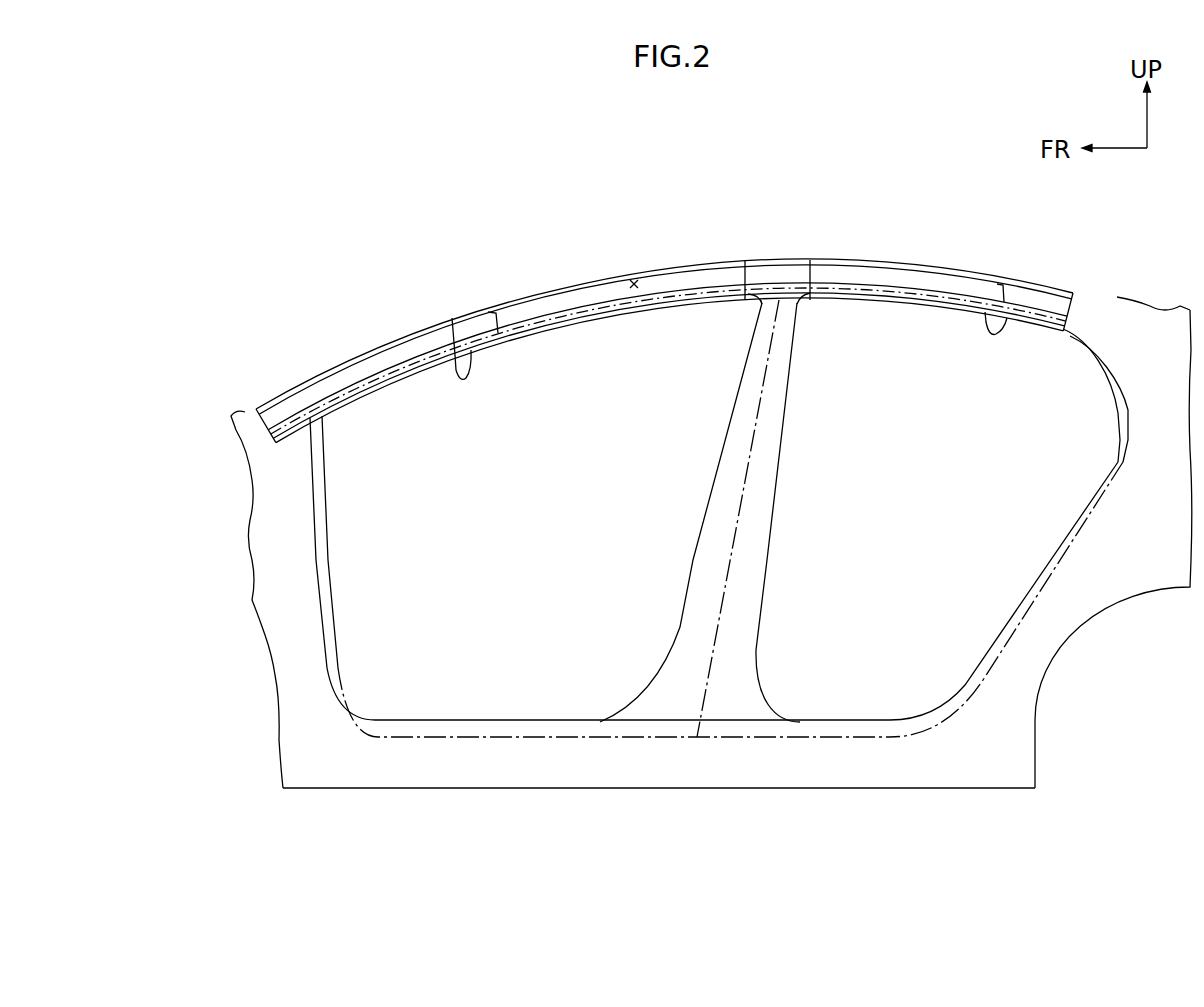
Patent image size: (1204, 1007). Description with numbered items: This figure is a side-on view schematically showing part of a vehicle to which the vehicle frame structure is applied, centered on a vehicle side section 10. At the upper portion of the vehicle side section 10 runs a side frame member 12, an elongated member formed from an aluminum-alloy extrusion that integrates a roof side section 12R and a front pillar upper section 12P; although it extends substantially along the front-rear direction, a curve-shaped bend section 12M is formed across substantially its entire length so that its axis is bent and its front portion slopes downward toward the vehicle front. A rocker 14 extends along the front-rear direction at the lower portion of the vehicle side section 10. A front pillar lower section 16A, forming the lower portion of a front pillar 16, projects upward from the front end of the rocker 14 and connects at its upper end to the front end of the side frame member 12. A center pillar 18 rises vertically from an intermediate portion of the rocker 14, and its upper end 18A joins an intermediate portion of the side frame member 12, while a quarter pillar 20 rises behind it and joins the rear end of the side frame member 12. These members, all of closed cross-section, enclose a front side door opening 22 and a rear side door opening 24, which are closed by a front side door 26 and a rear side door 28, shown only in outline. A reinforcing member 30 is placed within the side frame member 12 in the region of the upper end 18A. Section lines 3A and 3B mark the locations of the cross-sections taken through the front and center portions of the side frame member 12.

The vehicle side section 10 is at (462, 216).
The side frame member 12 is at (887, 256).
The front pillar upper section 12P is at (364, 348).
The roof side section 12R is at (678, 268).
The bend section 12M is at (750, 240).
The rocker 14 is at (688, 789).
The front pillar 16 is at (204, 430).
The front pillar lower section 16A is at (282, 545).
The center pillar 18 is at (749, 460).
The upper end of center pillar 18A is at (740, 306).
The quarter pillar 20 is at (1130, 405).
The front side door opening 22 is at (452, 318).
The rear side door opening 24 is at (1012, 318).
The front side door 26 is at (318, 620).
The rear side door 28 is at (1072, 538).
The reinforcing member 30 is at (634, 280).
The section line 3A is at (352, 427).
The section line 3B is at (810, 318).